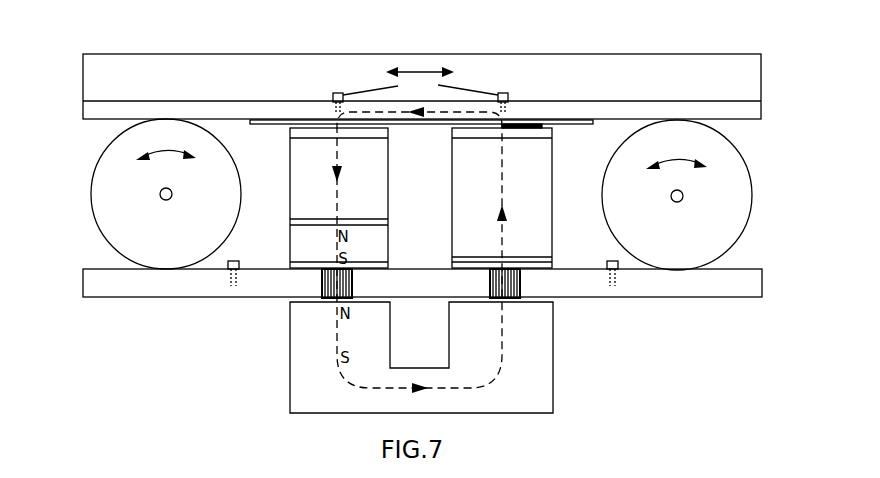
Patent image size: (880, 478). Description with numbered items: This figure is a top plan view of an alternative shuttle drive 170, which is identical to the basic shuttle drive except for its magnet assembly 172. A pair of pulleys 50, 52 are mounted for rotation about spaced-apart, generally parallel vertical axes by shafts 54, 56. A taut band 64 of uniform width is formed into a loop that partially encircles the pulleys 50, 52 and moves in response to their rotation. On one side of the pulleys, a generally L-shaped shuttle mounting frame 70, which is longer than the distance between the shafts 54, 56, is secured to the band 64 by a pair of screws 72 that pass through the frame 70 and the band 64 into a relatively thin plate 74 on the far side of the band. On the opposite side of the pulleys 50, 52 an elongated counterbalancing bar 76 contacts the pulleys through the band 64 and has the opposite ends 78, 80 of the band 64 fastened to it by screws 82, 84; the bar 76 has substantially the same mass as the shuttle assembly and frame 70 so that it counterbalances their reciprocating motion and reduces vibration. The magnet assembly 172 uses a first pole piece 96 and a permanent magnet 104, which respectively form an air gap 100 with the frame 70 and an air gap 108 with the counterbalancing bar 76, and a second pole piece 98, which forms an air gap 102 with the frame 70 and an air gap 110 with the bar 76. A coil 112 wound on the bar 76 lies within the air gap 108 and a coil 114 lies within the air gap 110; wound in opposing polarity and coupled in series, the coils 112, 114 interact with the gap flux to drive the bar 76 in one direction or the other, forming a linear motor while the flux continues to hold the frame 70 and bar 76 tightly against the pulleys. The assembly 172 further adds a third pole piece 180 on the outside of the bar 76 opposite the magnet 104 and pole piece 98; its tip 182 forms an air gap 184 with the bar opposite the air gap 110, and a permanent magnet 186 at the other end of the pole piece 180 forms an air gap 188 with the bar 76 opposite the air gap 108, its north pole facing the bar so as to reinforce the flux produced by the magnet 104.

The pulley 50 is at (733, 252).
The pulley 52 is at (108, 223).
The shaft 54 is at (678, 203).
The shaft 56 is at (170, 199).
The band 64 is at (624, 124).
The shuttle mounting frame 70 is at (762, 81).
The screws 72 is at (420, 81).
The thin plate 74 is at (513, 124).
The counterbalancing bar 76 is at (720, 290).
The end of band 78 is at (242, 258).
The end of band 80 is at (591, 270).
The screw 82 is at (227, 267).
The screw 84 is at (622, 270).
The first pole piece 96 is at (290, 181).
The second pole piece 98 is at (552, 218).
The air gap 100 is at (310, 128).
The air gap 102 is at (543, 128).
The permanent magnet 104 is at (297, 237).
The air gap 108 is at (292, 268).
The air gap 110 is at (553, 268).
The coil 112 is at (352, 283).
The coil 114 is at (493, 280).
The shuttle drive 170 is at (756, 196).
The magnet assembly 172 is at (562, 150).
The third pole piece 180 is at (521, 398).
The tip 182 is at (525, 307).
The air gap 184 is at (558, 302).
The permanent magnet 186 is at (290, 333).
The air gap 188 is at (290, 300).